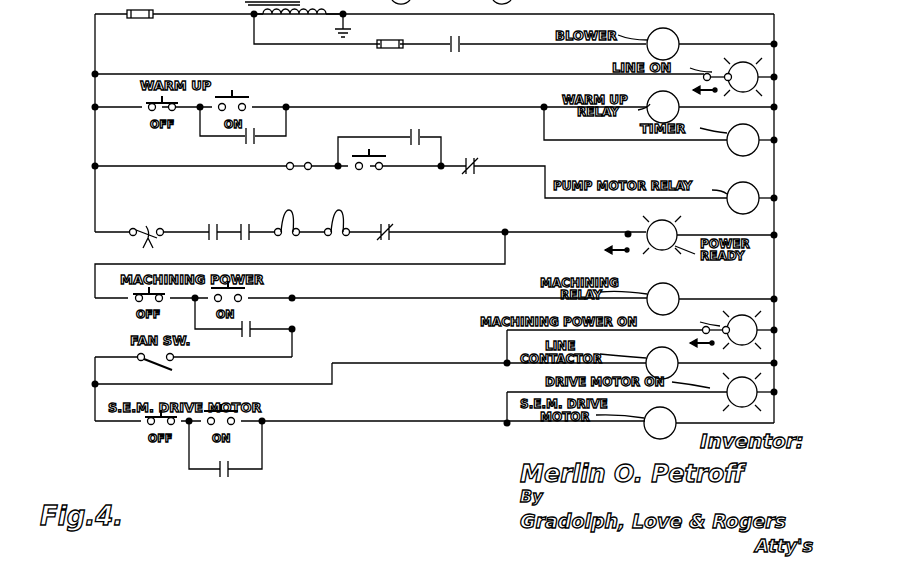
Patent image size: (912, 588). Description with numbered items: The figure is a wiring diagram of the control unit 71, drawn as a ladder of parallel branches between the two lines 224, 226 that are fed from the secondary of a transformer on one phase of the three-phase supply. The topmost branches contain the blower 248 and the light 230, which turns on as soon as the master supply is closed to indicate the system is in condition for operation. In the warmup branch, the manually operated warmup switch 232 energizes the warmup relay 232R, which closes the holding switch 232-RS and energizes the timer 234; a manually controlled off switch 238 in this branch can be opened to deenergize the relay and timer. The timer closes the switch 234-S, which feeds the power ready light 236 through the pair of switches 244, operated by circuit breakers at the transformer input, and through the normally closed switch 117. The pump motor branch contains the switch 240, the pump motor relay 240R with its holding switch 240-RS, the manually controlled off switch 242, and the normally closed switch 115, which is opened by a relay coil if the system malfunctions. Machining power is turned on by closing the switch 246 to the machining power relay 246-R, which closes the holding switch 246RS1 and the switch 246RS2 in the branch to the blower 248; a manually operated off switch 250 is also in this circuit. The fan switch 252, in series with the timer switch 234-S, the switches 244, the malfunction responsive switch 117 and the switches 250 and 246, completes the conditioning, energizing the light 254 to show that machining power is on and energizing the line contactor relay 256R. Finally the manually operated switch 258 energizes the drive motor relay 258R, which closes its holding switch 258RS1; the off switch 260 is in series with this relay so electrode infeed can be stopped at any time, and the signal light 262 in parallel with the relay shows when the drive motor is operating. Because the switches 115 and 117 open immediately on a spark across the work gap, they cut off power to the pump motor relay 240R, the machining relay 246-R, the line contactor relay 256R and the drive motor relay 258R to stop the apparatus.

The unit 71 is at (70, 27).
The line 224 is at (95, 48).
The line 226 is at (778, 30).
The blower 248 is at (664, 36).
The light 230 is at (757, 68).
The warmup switch 232 is at (244, 100).
The off switch 238 is at (150, 118).
The holding switch 232-RS is at (246, 140).
The warmup relay 232R is at (652, 113).
The timer 234 is at (758, 132).
The switch 240 is at (356, 160).
The switch 240-RS is at (418, 134).
The normally closed switch 115 is at (468, 160).
The off switch 242 is at (290, 172).
The pump motor relay 240R is at (758, 193).
The switch 234-S is at (146, 228).
The switches 244 is at (244, 226).
The normally closed switch 117 is at (406, 203).
The power ready light 236 is at (650, 224).
The switch 246 is at (242, 296).
The machining power relay 246-R is at (668, 288).
The off switch 250 is at (132, 305).
The switch 246RS1 is at (255, 335).
The switch 246RS2 is at (462, 30).
The light 254 is at (757, 320).
The line contactor relay 256R is at (675, 360).
The fan switch 252 is at (175, 370).
The signal light 262 is at (757, 386).
The switch 258 is at (240, 428).
The off switch 260 is at (145, 430).
The switch 258RS1 is at (230, 476).
The drive motor relay 258R is at (670, 420).